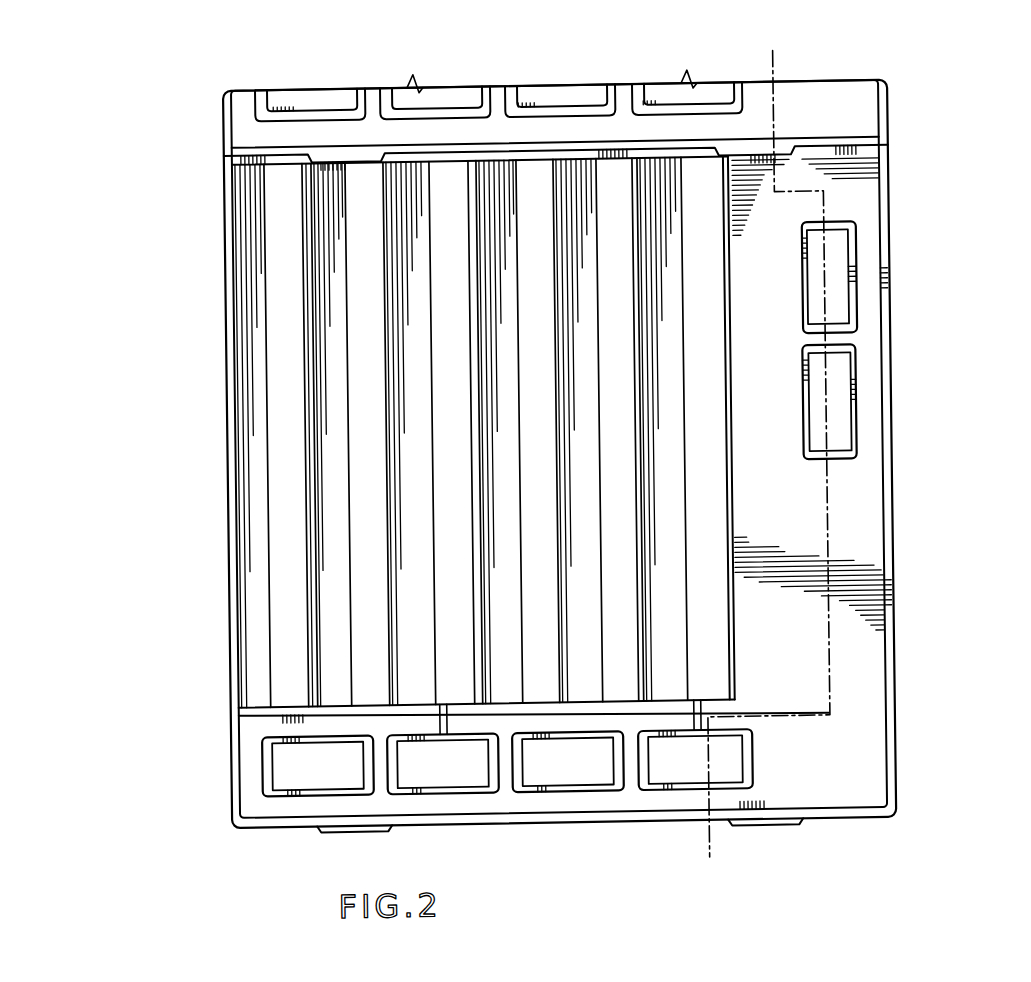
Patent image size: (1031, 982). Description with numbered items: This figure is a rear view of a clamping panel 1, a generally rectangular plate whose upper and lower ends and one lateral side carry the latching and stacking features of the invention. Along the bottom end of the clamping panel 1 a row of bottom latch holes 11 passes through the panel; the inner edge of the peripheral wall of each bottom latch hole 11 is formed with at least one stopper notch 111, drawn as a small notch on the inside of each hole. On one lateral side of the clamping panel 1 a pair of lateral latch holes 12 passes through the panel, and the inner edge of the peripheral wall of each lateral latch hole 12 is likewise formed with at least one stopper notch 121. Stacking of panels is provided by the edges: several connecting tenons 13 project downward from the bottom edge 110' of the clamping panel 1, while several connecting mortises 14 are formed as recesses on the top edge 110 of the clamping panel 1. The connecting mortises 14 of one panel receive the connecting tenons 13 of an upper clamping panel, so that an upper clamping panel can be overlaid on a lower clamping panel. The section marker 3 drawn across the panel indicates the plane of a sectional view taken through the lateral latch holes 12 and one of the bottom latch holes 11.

The clamping panel 1 is at (559, 441).
The bottom latch hole 11 is at (501, 816).
The stopper notch 111 is at (455, 789).
The lateral latch hole 12 is at (889, 339).
The stopper notch 121 is at (794, 342).
The connecting tenon 13 is at (564, 490).
The connecting mortise 14 is at (554, 177).
The top edge 110 is at (619, 448).
The bottom edge 110' is at (570, 793).
The section line III-III 3 is at (734, 455).